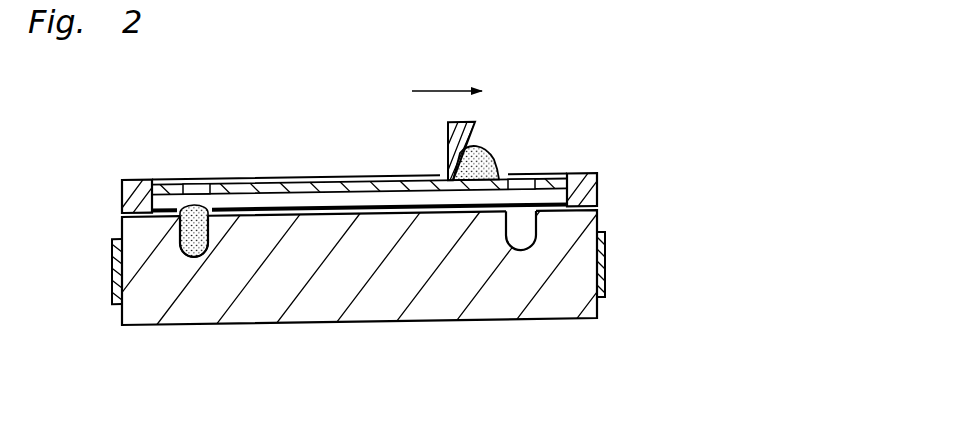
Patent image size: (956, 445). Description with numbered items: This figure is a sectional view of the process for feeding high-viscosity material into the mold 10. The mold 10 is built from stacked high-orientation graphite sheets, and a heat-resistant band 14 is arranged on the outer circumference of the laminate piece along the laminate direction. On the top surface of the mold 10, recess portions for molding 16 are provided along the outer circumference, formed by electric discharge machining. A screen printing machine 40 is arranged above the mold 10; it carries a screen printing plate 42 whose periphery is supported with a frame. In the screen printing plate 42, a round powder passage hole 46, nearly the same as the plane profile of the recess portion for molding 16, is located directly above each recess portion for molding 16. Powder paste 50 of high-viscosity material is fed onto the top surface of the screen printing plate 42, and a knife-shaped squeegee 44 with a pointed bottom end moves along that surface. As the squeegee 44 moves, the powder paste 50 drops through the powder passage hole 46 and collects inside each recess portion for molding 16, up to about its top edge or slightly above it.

The mold 10 is at (426, 302).
The heat-resistant band 14 is at (605, 268).
The recess portion for molding 16 is at (193, 250).
The screen printing machine 40 is at (591, 164).
The screen printing plate 42 is at (262, 183).
The squeegee 44 is at (447, 143).
The powder passage hole 46 is at (190, 184).
The powder paste 50 is at (179, 230).